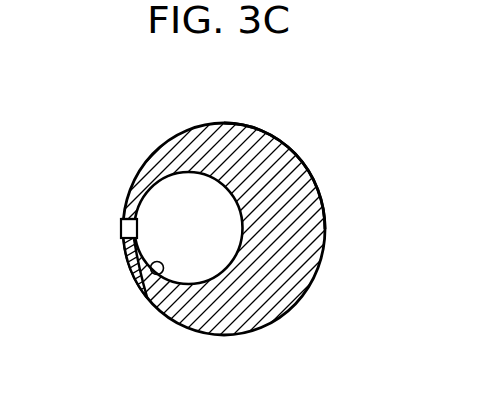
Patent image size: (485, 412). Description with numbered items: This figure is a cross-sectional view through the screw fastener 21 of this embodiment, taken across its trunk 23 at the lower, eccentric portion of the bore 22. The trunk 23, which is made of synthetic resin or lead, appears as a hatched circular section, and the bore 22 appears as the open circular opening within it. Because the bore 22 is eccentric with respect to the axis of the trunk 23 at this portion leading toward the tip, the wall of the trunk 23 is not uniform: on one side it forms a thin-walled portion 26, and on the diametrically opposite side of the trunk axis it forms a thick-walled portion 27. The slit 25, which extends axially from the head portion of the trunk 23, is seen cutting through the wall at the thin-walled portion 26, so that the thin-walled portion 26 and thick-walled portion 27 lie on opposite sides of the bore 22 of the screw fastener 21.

The screw fastener 21 is at (188, 128).
The bore 22 is at (150, 297).
The trunk 23 is at (278, 168).
The slit 25 is at (133, 230).
The thin-walled portion 26 is at (128, 207).
The thick-walled portion 27 is at (290, 275).